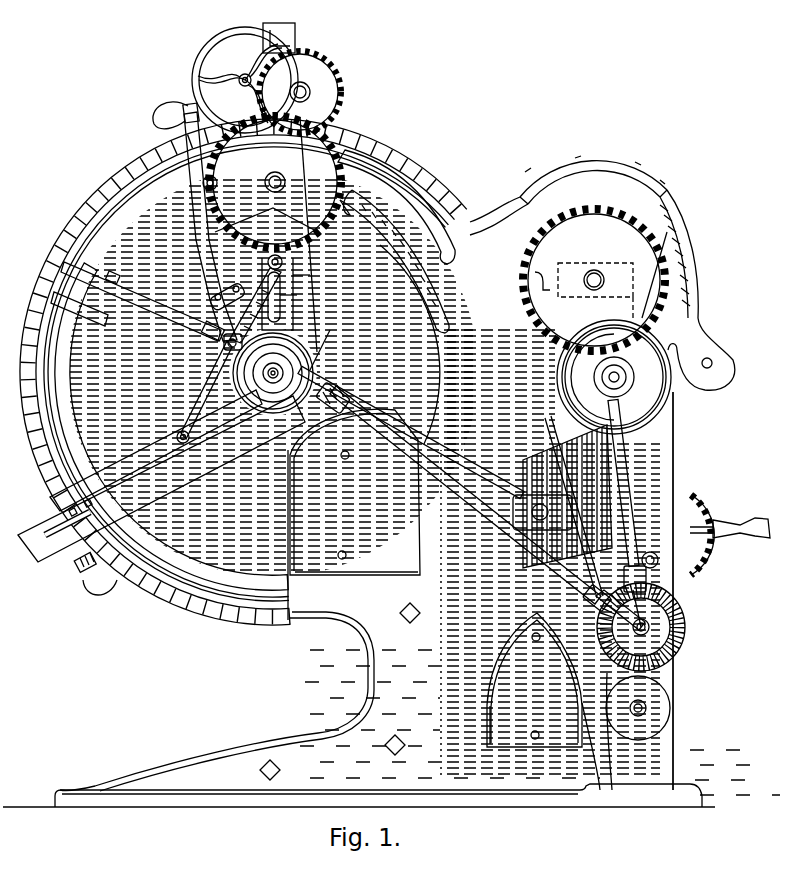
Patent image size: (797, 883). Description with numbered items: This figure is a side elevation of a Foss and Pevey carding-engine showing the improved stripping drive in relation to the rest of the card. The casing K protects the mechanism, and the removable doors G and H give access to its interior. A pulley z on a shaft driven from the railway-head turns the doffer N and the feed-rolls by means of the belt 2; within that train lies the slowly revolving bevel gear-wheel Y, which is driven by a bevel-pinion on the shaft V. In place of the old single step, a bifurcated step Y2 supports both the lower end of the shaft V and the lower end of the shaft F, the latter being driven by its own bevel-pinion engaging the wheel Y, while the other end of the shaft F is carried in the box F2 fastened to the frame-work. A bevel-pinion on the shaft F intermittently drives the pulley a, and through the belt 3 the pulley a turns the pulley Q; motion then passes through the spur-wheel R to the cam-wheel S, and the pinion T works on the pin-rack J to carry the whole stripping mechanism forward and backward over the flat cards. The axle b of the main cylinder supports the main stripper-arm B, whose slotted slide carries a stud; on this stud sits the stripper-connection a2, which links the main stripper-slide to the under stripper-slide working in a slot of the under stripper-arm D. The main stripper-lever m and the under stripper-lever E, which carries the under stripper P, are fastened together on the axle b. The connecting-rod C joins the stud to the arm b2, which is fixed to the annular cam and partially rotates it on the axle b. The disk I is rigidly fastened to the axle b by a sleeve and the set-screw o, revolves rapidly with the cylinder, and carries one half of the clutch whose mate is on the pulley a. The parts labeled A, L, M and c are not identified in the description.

The graduated wheel A is at (243, 372).
The main stripper-arm B is at (312, 296).
The connecting-rod C is at (222, 306).
The under stripper-arm D is at (170, 462).
The under stripper-lever E is at (156, 450).
The shaft F is at (398, 470).
The box F2 is at (340, 392).
The removable door G is at (356, 524).
The removable door H is at (503, 721).
The disk I is at (273, 373).
The pin-rack J is at (160, 258).
The casing K is at (366, 494).
The pulley L is at (614, 377).
The gear wheel M is at (594, 280).
The doffer N is at (688, 238).
The under stripper P is at (76, 558).
The pulley Q is at (195, 55).
The spur-wheel R is at (335, 95).
The cam-wheel S is at (385, 150).
The pinion T is at (370, 198).
The shaft V is at (632, 466).
The bevel gear-wheel Y is at (686, 626).
The bifurcated step Y2 is at (598, 612).
The pulley z is at (672, 706).
The pulley a is at (324, 343).
The stripper-connection a2 is at (208, 372).
The axle b is at (274, 373).
The arm b2 is at (208, 327).
The slot c is at (294, 305).
The main stripper-lever m is at (254, 305).
The set-screw o is at (195, 213).
The belt 2 is at (681, 591).
The belt 3 is at (308, 268).